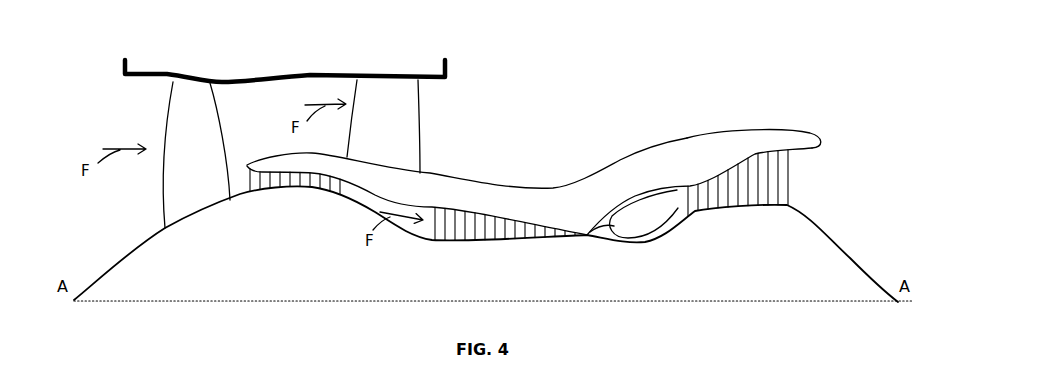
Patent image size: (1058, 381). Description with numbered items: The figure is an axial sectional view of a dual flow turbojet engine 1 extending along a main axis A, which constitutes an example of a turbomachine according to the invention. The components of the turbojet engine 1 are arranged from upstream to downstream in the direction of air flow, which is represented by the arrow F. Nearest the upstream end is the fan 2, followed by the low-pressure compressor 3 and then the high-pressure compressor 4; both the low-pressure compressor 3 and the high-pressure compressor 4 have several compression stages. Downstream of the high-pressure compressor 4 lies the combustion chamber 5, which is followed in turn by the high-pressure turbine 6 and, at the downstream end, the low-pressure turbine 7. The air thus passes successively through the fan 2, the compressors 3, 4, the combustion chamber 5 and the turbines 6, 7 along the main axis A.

The dual flow turbojet engine 1 is at (538, 74).
The fan 2 is at (135, 107).
The low-pressure compressor 3 is at (281, 152).
The high-pressure compressor 4 is at (487, 206).
The combustion chamber 5 is at (633, 210).
The high-pressure turbine 6 is at (698, 164).
The low-pressure turbine 7 is at (756, 128).